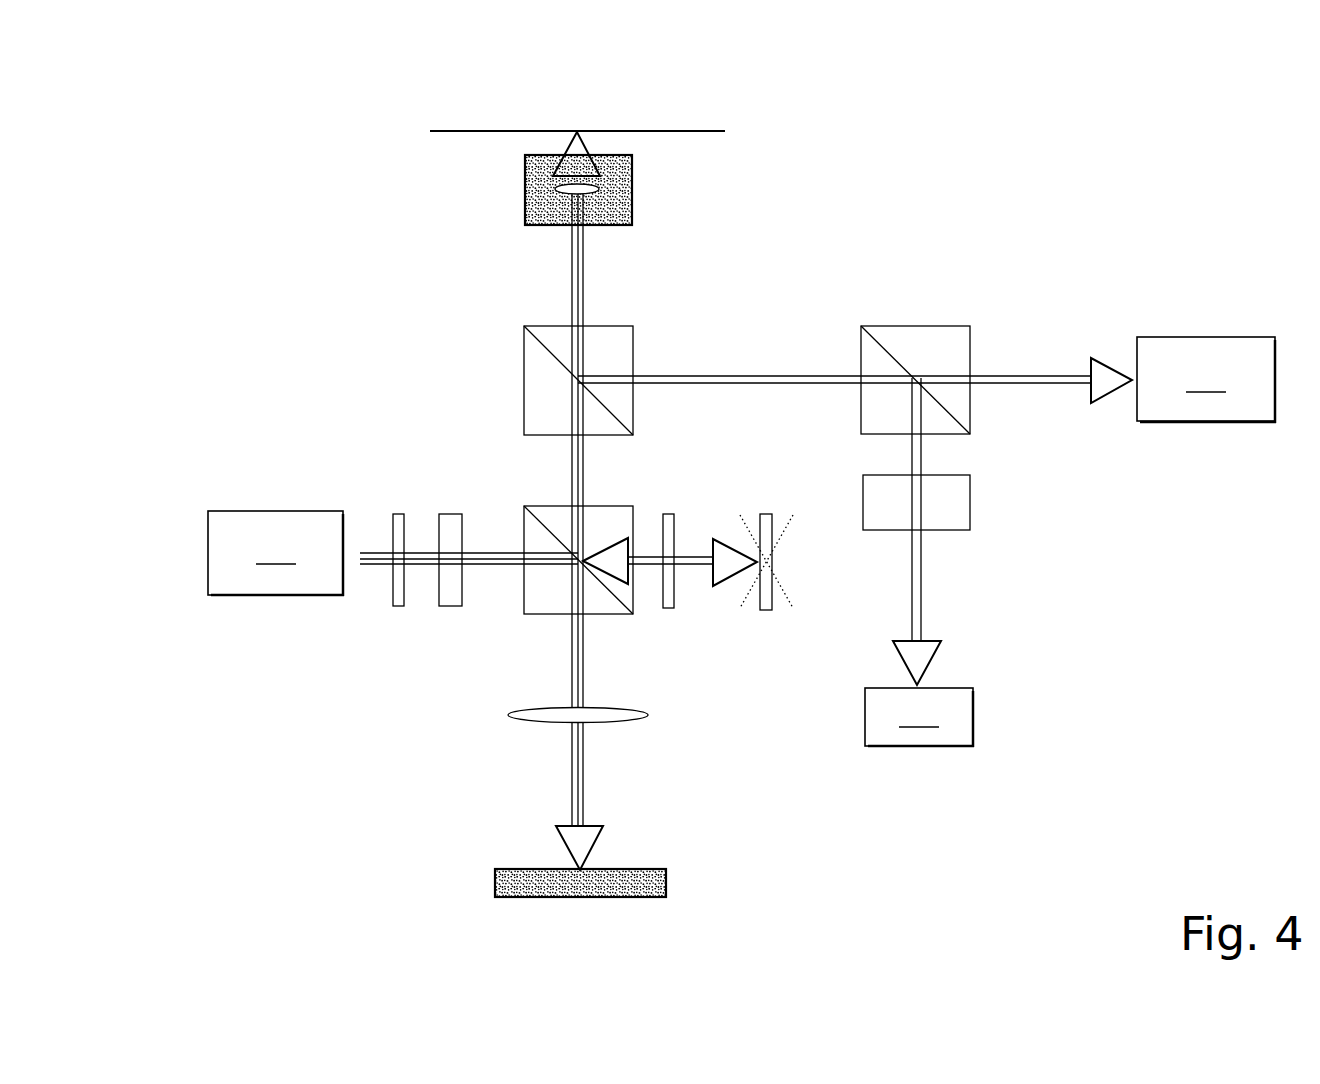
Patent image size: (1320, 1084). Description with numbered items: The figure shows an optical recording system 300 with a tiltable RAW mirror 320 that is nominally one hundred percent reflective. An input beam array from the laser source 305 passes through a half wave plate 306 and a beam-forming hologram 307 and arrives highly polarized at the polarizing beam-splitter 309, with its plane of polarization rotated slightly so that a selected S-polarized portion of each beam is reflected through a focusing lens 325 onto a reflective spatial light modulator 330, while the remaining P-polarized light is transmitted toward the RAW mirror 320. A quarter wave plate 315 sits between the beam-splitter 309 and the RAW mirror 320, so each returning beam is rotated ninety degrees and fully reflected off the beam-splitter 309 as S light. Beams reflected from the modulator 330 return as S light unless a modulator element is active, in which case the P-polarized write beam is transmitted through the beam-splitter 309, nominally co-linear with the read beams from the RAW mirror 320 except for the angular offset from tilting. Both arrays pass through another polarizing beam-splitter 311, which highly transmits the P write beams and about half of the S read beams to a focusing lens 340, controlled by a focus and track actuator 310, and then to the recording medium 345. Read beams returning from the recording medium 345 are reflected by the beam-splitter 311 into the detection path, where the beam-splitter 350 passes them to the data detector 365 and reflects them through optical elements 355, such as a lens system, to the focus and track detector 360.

The optical recording system 300 is at (1087, 121).
The laser source 305 is at (276, 553).
The half wave plate 306 is at (400, 607).
The beam-forming hologram 307 is at (450, 607).
The polarizing beam-splitter 309 is at (540, 506).
The focus and track actuator 310 is at (525, 196).
The polarizing beam-splitter 311 is at (633, 357).
The quarter wave plate 315 is at (672, 515).
The RAW mirror 320 is at (766, 515).
The focusing lens 325 is at (648, 715).
The reflective spatial light modulator 330 is at (495, 880).
The focusing lens 340 is at (599, 187).
The recording medium 345 is at (486, 130).
The beam-splitter 350 is at (970, 358).
The optical elements 355 is at (973, 508).
The focus and track detector 360 is at (919, 717).
The data detector 365 is at (1206, 380).